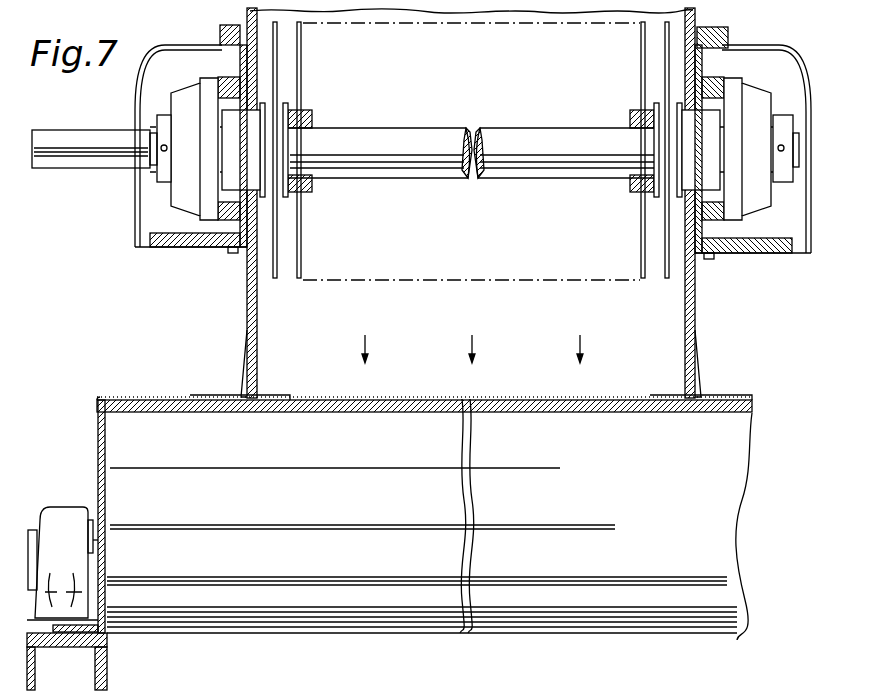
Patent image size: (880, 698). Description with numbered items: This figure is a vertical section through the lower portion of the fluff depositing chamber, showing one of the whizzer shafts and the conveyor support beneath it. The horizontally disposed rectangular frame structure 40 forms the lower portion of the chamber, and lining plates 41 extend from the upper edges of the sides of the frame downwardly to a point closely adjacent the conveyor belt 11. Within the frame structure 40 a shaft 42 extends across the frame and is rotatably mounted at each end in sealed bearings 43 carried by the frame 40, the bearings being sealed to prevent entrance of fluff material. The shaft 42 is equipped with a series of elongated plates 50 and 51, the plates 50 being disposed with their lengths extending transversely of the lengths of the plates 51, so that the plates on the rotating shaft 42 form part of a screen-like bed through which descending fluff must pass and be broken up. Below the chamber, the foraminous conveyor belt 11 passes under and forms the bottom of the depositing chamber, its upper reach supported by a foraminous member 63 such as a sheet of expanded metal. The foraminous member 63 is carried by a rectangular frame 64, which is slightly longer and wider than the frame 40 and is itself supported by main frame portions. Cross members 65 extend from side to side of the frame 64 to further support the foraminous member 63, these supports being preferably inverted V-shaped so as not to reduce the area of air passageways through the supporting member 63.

The conveyor belt 11 is at (628, 400).
The frame structure 40 is at (203, 246).
The lining plates 41 is at (257, 313).
The shafts 42 is at (412, 132).
The bearings 43 is at (203, 197).
The plates 50 is at (278, 52).
The plates 51 is at (268, 103).
The foraminous member 63 is at (602, 413).
The rectangular frame 64 is at (107, 450).
The cross members 65 is at (738, 548).